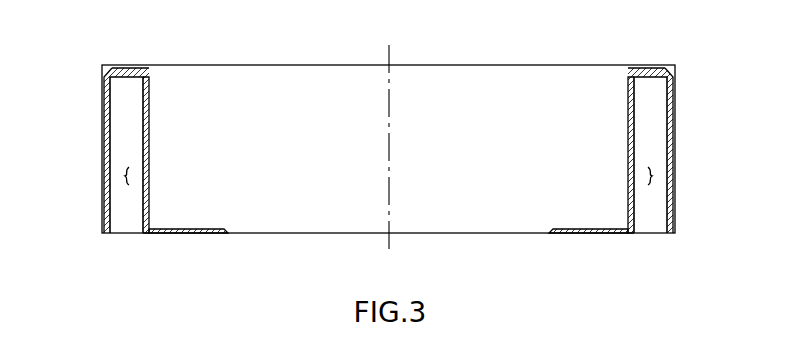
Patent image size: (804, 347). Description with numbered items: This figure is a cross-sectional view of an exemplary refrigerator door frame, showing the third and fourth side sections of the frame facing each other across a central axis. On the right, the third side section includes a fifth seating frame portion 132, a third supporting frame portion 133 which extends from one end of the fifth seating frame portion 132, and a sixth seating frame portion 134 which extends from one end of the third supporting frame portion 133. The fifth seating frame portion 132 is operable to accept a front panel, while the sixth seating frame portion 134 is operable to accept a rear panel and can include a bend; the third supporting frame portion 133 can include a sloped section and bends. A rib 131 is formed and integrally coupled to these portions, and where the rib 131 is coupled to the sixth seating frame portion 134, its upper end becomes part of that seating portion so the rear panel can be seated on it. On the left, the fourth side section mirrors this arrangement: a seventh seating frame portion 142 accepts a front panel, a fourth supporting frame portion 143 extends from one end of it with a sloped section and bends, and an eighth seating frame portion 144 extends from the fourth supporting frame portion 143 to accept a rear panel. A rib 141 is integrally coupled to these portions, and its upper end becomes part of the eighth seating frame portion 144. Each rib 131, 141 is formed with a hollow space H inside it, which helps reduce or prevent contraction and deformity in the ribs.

The rib 131 is at (627, 112).
The fifth seating frame portion 132 is at (597, 233).
The third supporting frame portion 133 is at (674, 137).
The sixth seating frame portion 134 is at (640, 68).
The rib 141 is at (150, 112).
The seventh seating frame portion 142 is at (180, 233).
The fourth supporting frame portion 143 is at (103, 137).
The eighth seating frame portion 144 is at (137, 68).
The hollow space H is at (130, 175).